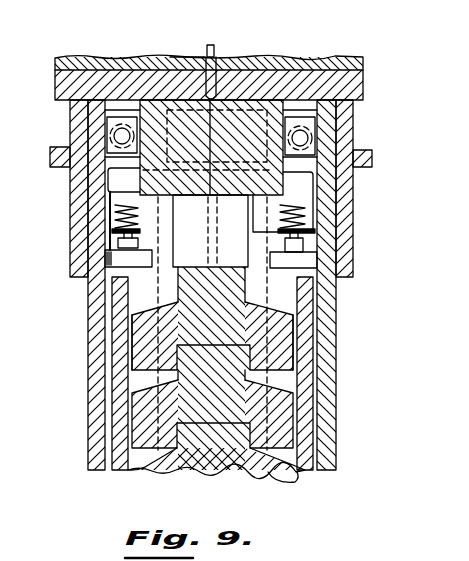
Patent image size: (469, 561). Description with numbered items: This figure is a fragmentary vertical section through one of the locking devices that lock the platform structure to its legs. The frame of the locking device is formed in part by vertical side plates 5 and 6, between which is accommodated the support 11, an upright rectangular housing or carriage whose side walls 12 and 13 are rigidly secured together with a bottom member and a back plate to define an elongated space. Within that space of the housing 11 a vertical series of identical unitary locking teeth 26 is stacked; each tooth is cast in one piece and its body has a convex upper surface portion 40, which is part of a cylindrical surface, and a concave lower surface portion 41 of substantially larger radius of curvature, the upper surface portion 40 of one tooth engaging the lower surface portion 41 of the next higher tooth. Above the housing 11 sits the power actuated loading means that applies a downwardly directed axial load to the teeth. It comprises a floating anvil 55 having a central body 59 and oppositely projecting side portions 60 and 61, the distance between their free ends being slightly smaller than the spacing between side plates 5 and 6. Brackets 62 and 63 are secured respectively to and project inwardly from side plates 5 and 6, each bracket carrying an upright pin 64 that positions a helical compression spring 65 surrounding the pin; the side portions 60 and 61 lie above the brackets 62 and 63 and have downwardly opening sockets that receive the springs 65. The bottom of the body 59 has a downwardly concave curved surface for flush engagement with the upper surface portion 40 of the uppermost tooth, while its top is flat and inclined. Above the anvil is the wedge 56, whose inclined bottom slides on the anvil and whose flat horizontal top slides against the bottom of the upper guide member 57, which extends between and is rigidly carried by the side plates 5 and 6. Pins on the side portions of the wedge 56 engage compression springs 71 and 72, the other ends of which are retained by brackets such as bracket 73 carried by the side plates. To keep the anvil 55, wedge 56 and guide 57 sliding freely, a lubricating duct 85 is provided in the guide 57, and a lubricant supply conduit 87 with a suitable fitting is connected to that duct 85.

The vertical side plate 5 is at (332, 328).
The vertical side plate 6 is at (90, 353).
The support 11 is at (145, 474).
The side wall 12 is at (112, 432).
The side wall 13 is at (313, 425).
The locking tooth 26 is at (276, 347).
The convex upper surface portion 40 is at (228, 343).
The concave lower surface portion 41 is at (199, 350).
The floating anvil 55 is at (115, 203).
The wedge 56 is at (108, 180).
The upper guide member 57 is at (57, 82).
The central body 59 is at (200, 220).
The side portion 60 is at (80, 163).
The side portion 61 is at (312, 163).
The bracket 62 is at (133, 268).
The bracket 63 is at (273, 269).
The upright pin 64 is at (135, 244).
The helical compression spring 65 is at (140, 231).
The compression spring 71 is at (345, 125).
The compression spring 72 is at (100, 127).
The bracket 73 is at (114, 116).
The lubricating duct 85 is at (189, 51).
The lubricant supply conduit 87 is at (210, 45).